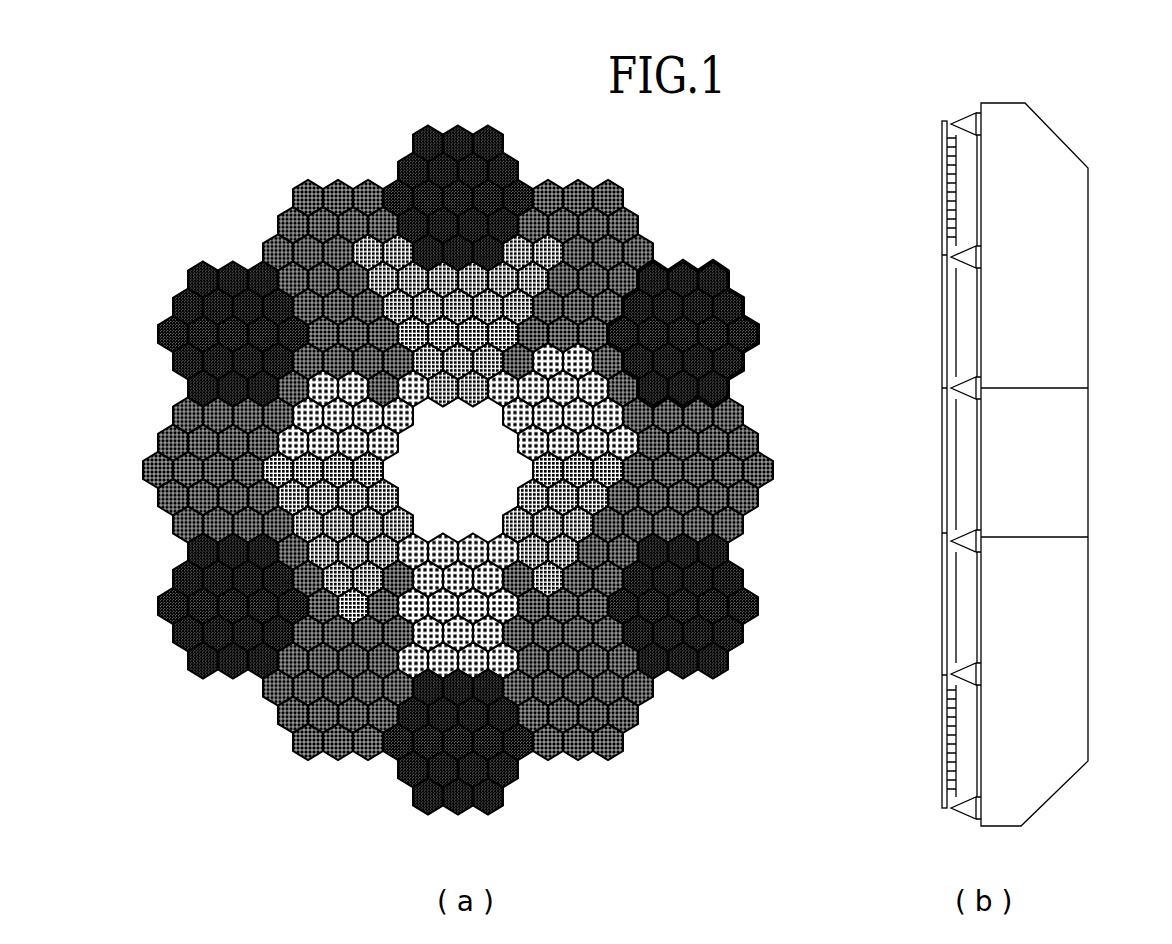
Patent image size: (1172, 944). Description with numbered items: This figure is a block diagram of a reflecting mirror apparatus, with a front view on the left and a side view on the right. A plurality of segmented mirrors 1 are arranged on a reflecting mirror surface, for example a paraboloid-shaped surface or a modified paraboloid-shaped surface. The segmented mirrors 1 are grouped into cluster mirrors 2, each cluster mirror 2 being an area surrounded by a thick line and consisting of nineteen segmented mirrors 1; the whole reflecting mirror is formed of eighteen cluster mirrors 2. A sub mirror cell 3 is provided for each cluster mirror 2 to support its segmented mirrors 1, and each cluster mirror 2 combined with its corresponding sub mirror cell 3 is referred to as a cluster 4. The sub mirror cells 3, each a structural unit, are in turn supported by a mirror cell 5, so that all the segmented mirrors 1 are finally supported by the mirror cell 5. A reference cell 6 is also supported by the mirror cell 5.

The segmented mirror 1 is at (533, 178).
The cluster mirror 2 is at (713, 253).
The sub mirror cell 3 is at (971, 153).
The cluster 4 is at (912, 243).
The mirror cell 5 is at (1058, 137).
The reference cell 6 is at (961, 104).